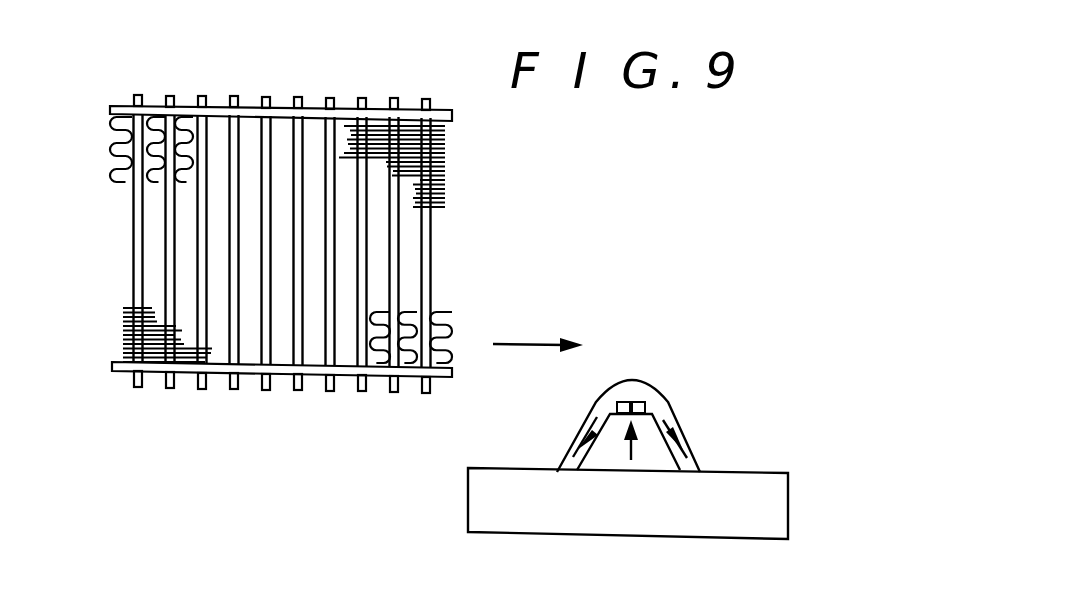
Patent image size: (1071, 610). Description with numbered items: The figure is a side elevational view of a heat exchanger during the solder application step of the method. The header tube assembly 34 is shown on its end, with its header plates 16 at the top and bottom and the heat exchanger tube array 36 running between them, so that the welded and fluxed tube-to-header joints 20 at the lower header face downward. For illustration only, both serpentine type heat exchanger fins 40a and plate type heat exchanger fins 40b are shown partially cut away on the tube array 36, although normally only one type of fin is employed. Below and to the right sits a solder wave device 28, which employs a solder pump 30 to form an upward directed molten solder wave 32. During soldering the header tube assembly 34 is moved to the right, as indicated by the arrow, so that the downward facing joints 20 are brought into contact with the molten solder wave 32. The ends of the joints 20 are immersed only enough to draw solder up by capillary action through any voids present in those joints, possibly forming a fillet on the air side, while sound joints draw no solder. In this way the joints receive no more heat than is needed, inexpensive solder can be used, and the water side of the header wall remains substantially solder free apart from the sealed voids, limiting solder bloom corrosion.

The header plate 16 is at (127, 106).
The tube-to-header joint 20 is at (331, 97).
The solder wave device 28 is at (565, 495).
The solder pump 30 is at (657, 445).
The molten solder wave 32 is at (633, 392).
The header tube assembly 34 is at (458, 207).
The heat exchanger tube array 36 is at (172, 228).
The serpentine type heat exchanger fins 40a is at (112, 145).
The plate type heat exchanger fins 40b is at (438, 153).